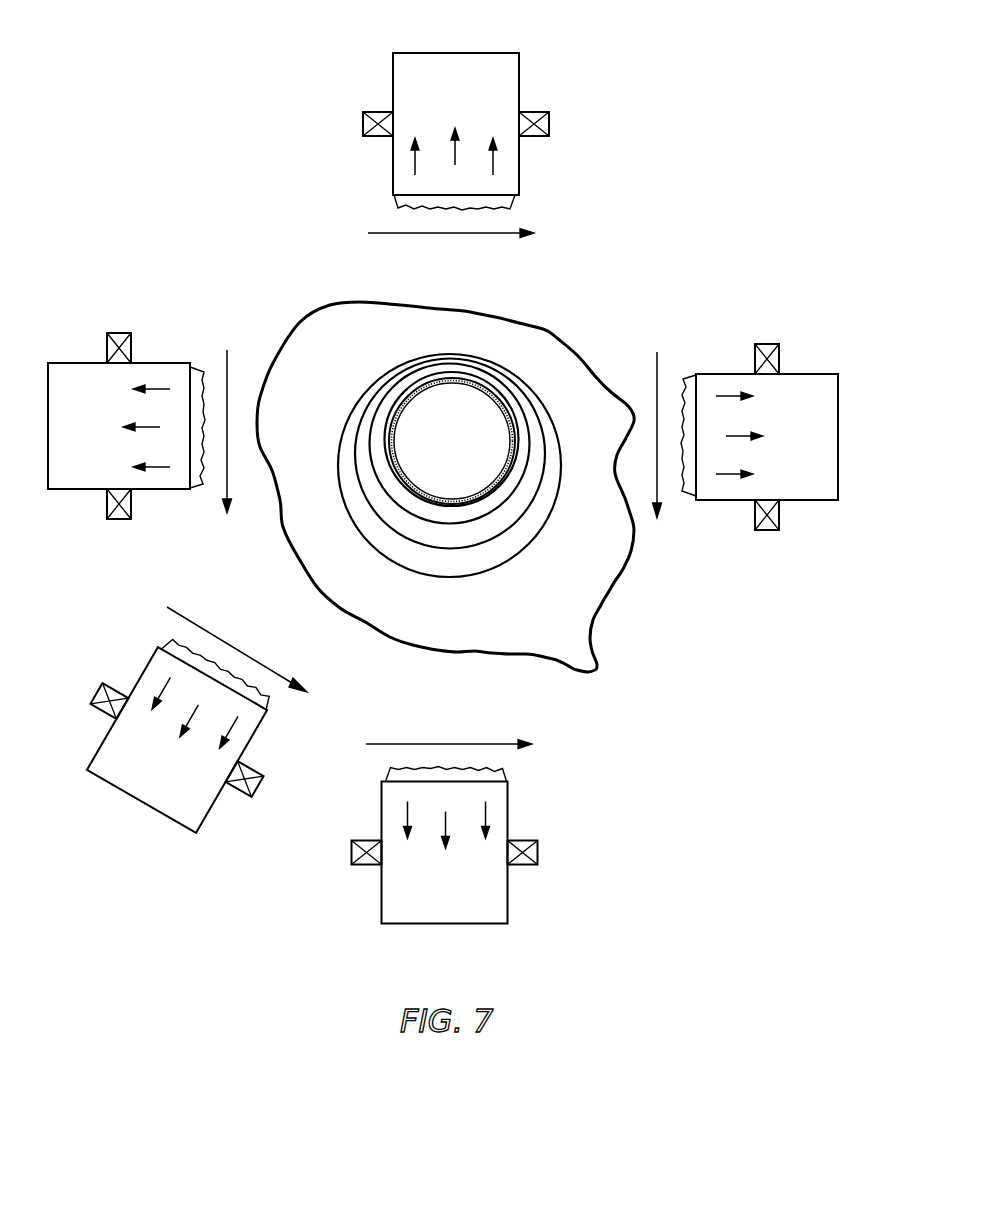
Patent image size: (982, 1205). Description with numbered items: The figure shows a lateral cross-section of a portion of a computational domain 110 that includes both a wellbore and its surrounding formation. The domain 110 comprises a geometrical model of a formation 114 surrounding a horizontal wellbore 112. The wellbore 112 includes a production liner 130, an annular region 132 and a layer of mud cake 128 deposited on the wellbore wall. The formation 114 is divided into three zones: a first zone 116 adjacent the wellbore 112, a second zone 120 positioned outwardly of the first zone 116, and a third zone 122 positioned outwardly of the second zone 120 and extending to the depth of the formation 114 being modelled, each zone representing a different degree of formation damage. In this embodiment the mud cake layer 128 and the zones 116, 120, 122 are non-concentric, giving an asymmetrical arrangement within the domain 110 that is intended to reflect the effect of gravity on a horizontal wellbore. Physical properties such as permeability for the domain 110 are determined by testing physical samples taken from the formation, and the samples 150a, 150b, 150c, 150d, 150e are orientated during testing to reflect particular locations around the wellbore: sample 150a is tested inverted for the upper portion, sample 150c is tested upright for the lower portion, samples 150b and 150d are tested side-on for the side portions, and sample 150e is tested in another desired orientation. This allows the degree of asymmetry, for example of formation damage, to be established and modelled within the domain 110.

The computational domain 110 is at (459, 495).
The wellbore 112 is at (472, 449).
The formation 114 is at (551, 333).
The first zone 116 is at (480, 532).
The second zone 120 is at (400, 548).
The third zone 122 is at (459, 633).
The mud cake layer 128 is at (502, 490).
The production liner 130 is at (413, 390).
The annular region 132 is at (457, 375).
The sample 150a is at (462, 62).
The sample 150b is at (818, 380).
The sample 150c is at (432, 915).
The sample 150d is at (68, 482).
The sample 150e is at (178, 815).